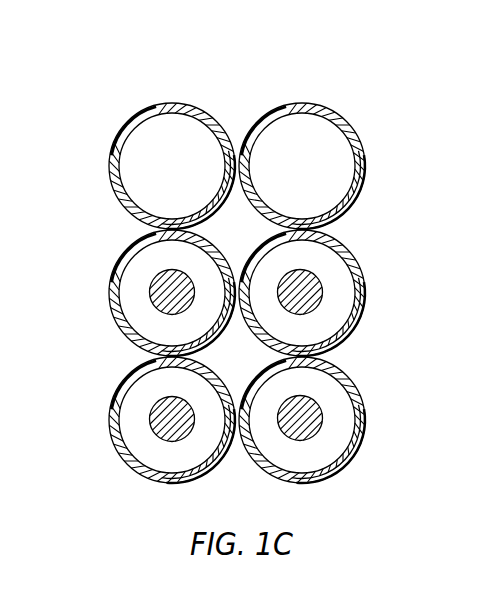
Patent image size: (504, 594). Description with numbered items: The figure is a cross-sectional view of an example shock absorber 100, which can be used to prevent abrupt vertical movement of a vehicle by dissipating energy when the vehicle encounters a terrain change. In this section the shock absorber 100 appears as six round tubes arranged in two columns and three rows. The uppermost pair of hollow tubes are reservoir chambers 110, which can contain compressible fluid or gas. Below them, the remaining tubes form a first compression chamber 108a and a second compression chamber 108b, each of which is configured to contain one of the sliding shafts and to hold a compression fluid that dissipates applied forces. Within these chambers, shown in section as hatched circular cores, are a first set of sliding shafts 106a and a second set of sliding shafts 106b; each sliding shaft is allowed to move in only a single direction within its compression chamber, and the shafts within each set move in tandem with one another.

The shock absorber 100 is at (131, 58).
The reservoir chambers 110 is at (283, 143).
The first compression chamber 108a is at (208, 310).
The second compression chamber 108b is at (265, 268).
The first set of sliding shafts 106a is at (183, 290).
The second set of sliding shafts 106b is at (275, 308).